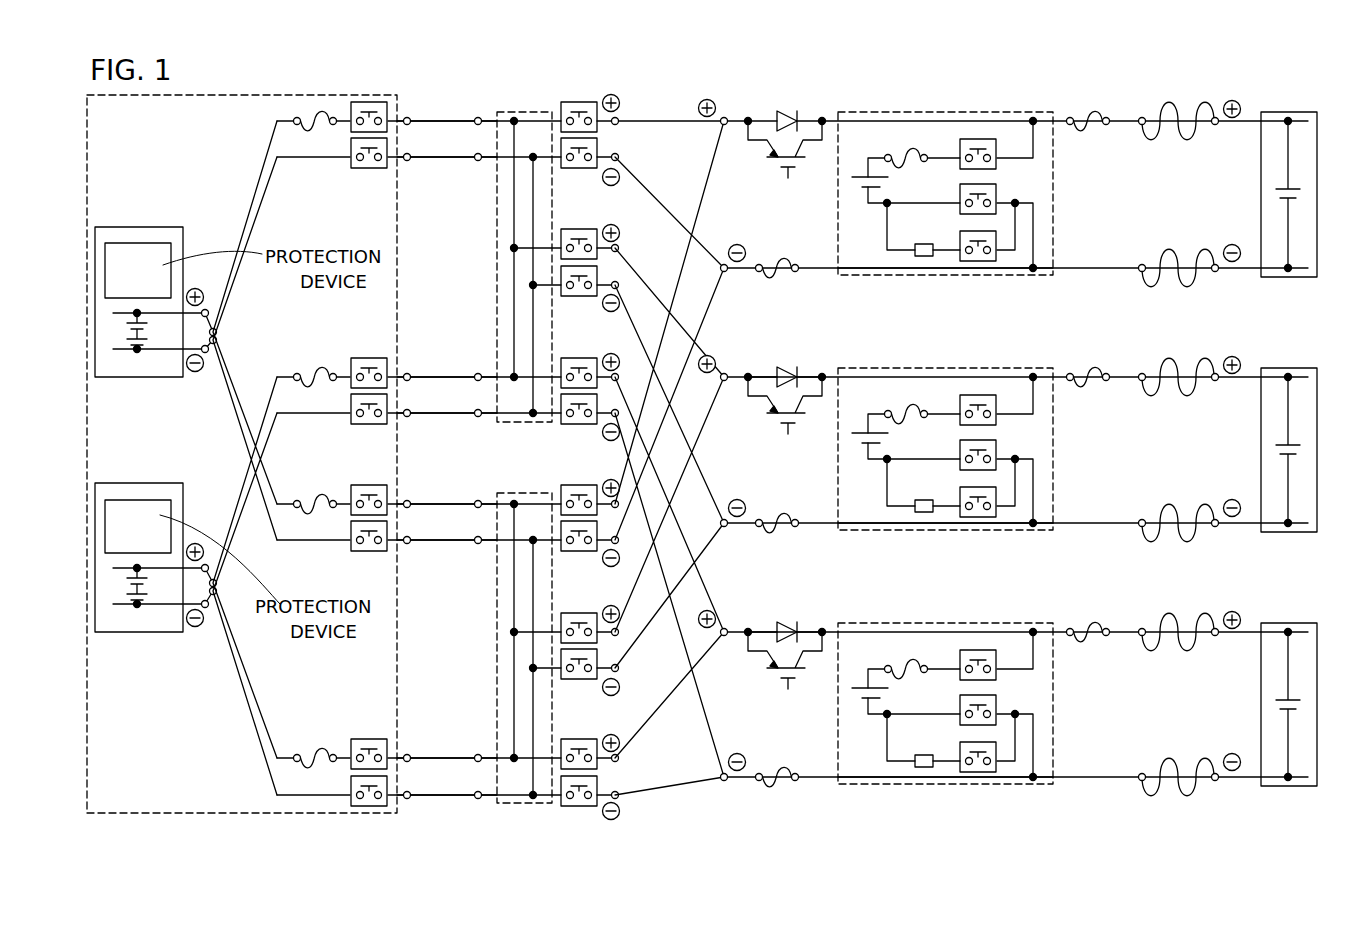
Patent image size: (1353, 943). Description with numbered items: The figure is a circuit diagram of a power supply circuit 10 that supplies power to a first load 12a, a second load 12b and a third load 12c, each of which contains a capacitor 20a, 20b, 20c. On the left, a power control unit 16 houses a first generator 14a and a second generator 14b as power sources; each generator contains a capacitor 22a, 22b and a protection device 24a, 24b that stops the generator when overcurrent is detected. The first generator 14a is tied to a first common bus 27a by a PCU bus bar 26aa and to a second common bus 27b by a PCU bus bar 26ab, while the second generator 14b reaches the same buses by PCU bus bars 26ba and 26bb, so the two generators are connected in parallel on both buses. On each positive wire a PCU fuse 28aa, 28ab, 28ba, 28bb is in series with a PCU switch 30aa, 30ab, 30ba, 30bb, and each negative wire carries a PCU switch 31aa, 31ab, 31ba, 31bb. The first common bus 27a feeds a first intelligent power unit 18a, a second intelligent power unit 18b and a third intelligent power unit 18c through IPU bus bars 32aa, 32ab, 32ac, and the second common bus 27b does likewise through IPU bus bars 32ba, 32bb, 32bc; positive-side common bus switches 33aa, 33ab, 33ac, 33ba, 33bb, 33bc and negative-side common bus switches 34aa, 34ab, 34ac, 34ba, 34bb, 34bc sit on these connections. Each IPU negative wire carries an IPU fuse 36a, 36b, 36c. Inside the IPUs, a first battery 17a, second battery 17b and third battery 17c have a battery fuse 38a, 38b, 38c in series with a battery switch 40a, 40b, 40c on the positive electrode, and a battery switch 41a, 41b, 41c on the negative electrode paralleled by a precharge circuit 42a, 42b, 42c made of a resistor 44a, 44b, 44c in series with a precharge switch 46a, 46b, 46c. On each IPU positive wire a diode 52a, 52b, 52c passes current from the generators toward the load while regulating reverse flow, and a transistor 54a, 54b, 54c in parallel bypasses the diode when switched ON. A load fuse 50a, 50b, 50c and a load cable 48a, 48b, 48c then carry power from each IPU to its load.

The power supply circuit 10 is at (1207, 75).
The first load 12a is at (1281, 112).
The second load 12b is at (1281, 368).
The third load 12c is at (1281, 623).
The first generator 14a is at (163, 227).
The second generator 14b is at (163, 483).
The power control unit 16 is at (213, 93).
The first battery 17a is at (858, 191).
The second battery 17b is at (858, 447).
The third battery 17c is at (858, 702).
The first intelligent power unit 18a is at (923, 112).
The second intelligent power unit 18b is at (1035, 368).
The third intelligent power unit 18c is at (1035, 623).
The capacitor 20a is at (1283, 193).
The capacitor 20b is at (1283, 449).
The capacitor 20c is at (1283, 704).
The capacitor 22a is at (126, 336).
The capacitor 22b is at (126, 591).
The protection device 24a is at (126, 243).
The protection device 24b is at (126, 500).
The PCU bus bar 26aa is at (453, 157).
The PCU bus bar 26ba is at (453, 413).
The PCU bus bar 26ab is at (453, 540).
The PCU bus bar 26bb is at (453, 795).
The first common bus 27a is at (523, 111).
The second common bus 27b is at (497, 589).
The PCU fuse 28aa is at (316, 110).
The PCU fuse 28ba is at (316, 366).
The PCU fuse 28ab is at (316, 493).
The PCU fuse 28bb is at (316, 747).
The PCU switch 30aa is at (370, 102).
The PCU switch 30ba is at (370, 358).
The PCU switch 30ab is at (370, 485).
The PCU switch 30bb is at (370, 739).
The PCU switch 31aa is at (372, 168).
The PCU switch 31ba is at (388, 425).
The PCU switch 31ab is at (372, 551).
The PCU switch 31bb is at (388, 805).
The IPU bus bar 32aa is at (627, 160).
The IPU bus bar 32ab is at (622, 303).
The IPU bus bar 32ac is at (625, 410).
The IPU bus bar 32ba is at (640, 472).
The IPU bus bar 32bb is at (624, 620).
The IPU bus bar 32bc is at (622, 790).
The common bus switch 33aa is at (584, 102).
The common bus switch 33ab is at (561, 240).
The common bus switch 33ac is at (575, 358).
The common bus switch 33ba is at (562, 487).
The common bus switch 33bb is at (561, 627).
The common bus switch 33bc is at (567, 740).
The common bus switch 34aa is at (583, 168).
The common bus switch 34ab is at (561, 279).
The common bus switch 34ac is at (575, 424).
The common bus switch 34ba is at (583, 551).
The common bus switch 34bb is at (561, 660).
The common bus switch 34bc is at (600, 786).
The IPU fuse 36a is at (782, 262).
The IPU fuse 36b is at (782, 517).
The IPU fuse 36c is at (782, 771).
The battery fuse 38a is at (912, 148).
The battery fuse 38b is at (912, 404).
The battery fuse 38c is at (912, 659).
The battery switch 40a is at (979, 139).
The battery switch 40b is at (979, 395).
The battery switch 40c is at (979, 650).
The battery switch 41a is at (960, 196).
The battery switch 41b is at (960, 452).
The battery switch 41c is at (960, 707).
The precharge circuit 42a is at (950, 278).
The precharge circuit 42b is at (950, 534).
The precharge circuit 42c is at (950, 788).
The resistor 44a is at (924, 258).
The resistor 44b is at (924, 514).
The resistor 44c is at (924, 769).
The precharge switch 46a is at (960, 245).
The precharge switch 46b is at (960, 501).
The precharge switch 46c is at (960, 756).
The load cable 48a is at (1167, 246).
The load cable 48b is at (1167, 502).
The load cable 48c is at (1167, 756).
The load fuse 50a is at (1094, 112).
The load fuse 50b is at (1094, 368).
The load fuse 50c is at (1094, 623).
The diode 52a is at (785, 110).
The diode 52b is at (785, 366).
The diode 52c is at (785, 621).
The transistor 54a is at (784, 178).
The transistor 54b is at (784, 434).
The transistor 54c is at (784, 689).